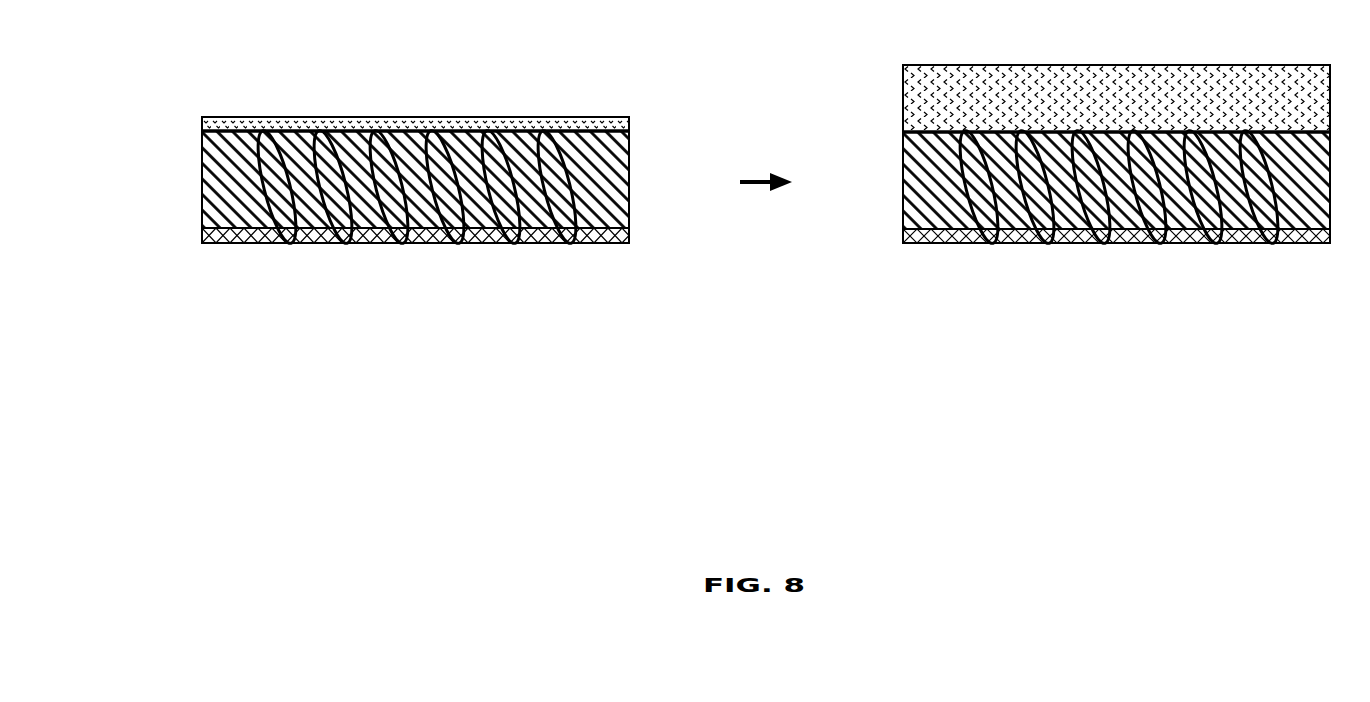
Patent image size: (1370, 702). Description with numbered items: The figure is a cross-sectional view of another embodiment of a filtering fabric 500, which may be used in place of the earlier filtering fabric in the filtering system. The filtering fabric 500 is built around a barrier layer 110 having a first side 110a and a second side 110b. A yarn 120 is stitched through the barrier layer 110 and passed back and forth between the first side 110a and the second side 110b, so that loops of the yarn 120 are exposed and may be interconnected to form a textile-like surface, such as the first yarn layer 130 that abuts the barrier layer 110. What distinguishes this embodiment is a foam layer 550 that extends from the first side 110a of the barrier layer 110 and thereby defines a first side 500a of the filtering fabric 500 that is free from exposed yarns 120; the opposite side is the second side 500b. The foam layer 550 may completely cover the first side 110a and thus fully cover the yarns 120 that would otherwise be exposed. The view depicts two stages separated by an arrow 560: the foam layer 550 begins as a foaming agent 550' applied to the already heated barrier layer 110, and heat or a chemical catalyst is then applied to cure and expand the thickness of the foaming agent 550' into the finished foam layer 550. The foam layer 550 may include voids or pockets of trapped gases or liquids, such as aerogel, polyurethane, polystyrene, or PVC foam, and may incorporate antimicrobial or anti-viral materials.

The filtering fabric 500 is at (148, 79).
The first side of filtering fabric 500a is at (572, 117).
The second side of filtering fabric 500b is at (592, 244).
The barrier layer 110 is at (202, 193).
The first side of barrier layer 110a is at (629, 127).
The second side of barrier layer 110b is at (630, 236).
The yarn 120 is at (472, 243).
The first yarn layer 130 is at (204, 243).
The foam layer 550 is at (1116, 83).
The foaming agent 550' is at (415, 105).
The thinning process arrow 560 is at (762, 187).